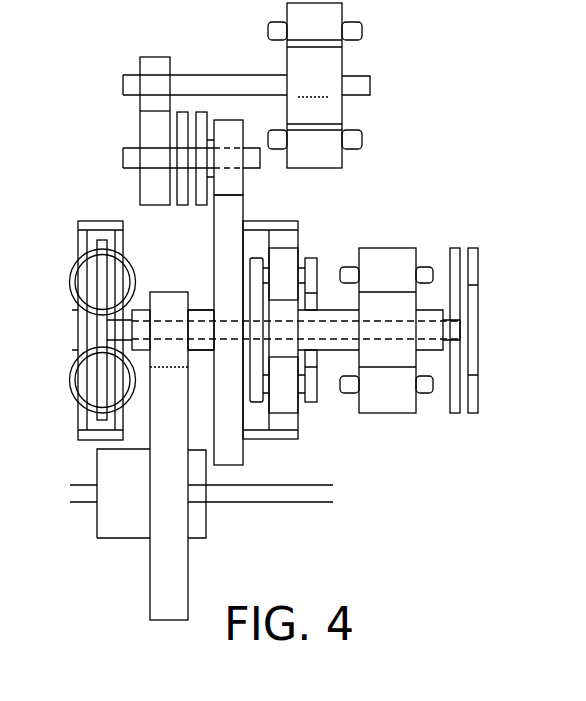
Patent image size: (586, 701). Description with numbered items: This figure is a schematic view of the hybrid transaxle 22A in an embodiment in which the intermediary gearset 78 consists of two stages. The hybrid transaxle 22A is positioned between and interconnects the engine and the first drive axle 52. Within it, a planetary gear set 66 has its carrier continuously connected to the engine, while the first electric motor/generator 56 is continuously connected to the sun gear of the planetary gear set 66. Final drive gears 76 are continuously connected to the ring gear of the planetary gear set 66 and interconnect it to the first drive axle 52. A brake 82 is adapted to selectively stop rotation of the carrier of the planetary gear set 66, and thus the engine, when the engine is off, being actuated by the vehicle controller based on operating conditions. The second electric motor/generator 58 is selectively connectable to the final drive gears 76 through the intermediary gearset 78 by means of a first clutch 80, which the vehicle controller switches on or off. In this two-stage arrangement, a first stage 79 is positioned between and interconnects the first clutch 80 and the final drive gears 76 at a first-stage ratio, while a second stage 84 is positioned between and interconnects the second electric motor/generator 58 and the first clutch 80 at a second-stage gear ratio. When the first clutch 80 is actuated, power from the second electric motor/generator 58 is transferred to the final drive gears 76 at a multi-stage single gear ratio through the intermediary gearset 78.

The hybrid transaxle 22A is at (90, 548).
The first drive axle 52 is at (268, 493).
The first electric motor/generator 56 is at (378, 305).
The second electric motor/generator 58 is at (246, 85).
The planetary gear set 66 is at (290, 447).
The final drive gears 76 is at (170, 367).
The intermediary gearset 78 is at (214, 262).
The first stage 79 is at (228, 197).
The first clutch 80 is at (193, 153).
The brake 82 is at (460, 330).
The second stage 84 is at (148, 86).